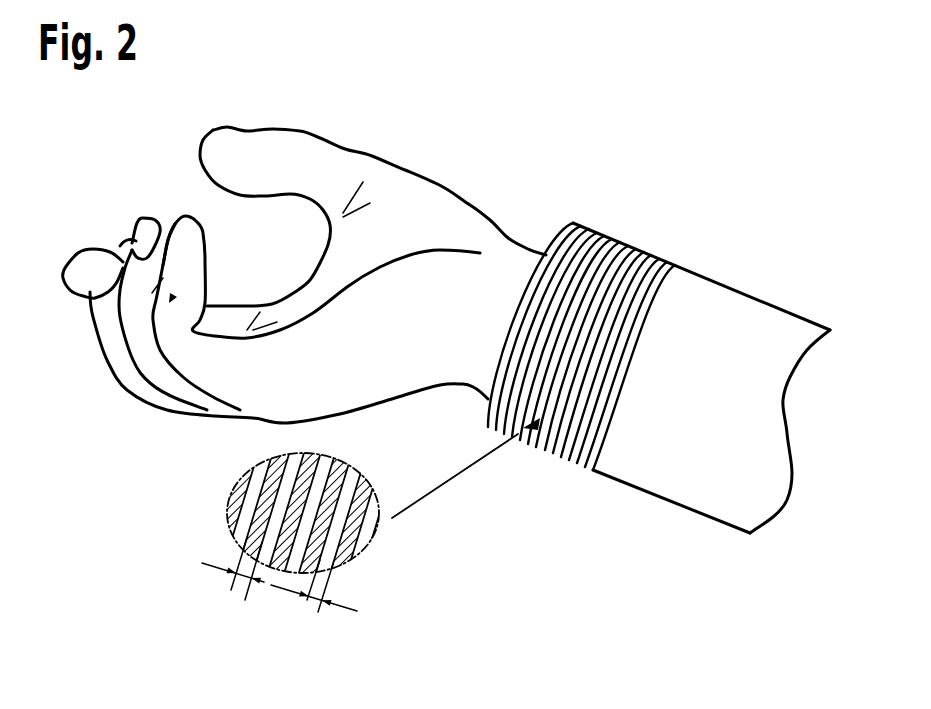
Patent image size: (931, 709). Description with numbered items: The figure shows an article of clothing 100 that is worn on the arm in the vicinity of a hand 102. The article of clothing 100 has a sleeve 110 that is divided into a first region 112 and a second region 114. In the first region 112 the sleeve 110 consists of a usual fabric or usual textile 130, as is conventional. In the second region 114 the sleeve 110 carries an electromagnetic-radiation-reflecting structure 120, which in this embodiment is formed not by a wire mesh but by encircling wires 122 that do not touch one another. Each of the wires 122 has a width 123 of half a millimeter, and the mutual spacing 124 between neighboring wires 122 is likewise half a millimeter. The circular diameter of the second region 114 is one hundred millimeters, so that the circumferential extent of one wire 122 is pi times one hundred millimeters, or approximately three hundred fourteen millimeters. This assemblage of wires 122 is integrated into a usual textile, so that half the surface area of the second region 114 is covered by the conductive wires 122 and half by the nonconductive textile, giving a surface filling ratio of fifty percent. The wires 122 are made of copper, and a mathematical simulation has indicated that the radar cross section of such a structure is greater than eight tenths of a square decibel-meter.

The article of clothing 100 is at (722, 200).
The hand 102 is at (393, 381).
The sleeve 110 is at (701, 410).
The first region 112 is at (766, 275).
The second region 114 is at (637, 222).
The electromagnetic-radiation-reflecting structure 120 is at (602, 290).
The wires 122 is at (621, 362).
The width 123 is at (238, 592).
The mutual spacing 124 is at (312, 606).
The usual textile 130 is at (637, 453).